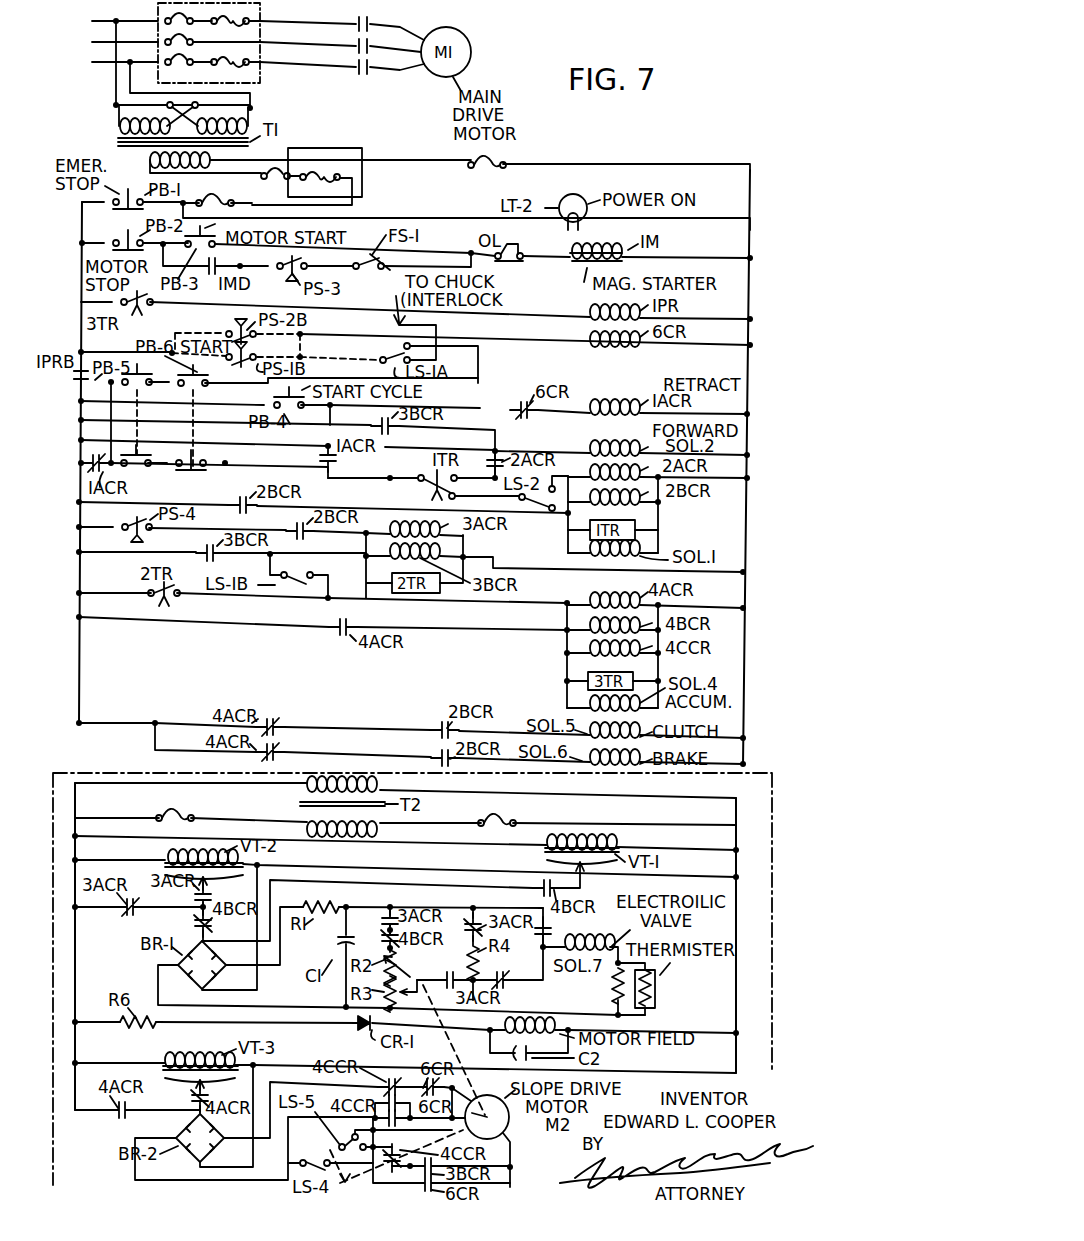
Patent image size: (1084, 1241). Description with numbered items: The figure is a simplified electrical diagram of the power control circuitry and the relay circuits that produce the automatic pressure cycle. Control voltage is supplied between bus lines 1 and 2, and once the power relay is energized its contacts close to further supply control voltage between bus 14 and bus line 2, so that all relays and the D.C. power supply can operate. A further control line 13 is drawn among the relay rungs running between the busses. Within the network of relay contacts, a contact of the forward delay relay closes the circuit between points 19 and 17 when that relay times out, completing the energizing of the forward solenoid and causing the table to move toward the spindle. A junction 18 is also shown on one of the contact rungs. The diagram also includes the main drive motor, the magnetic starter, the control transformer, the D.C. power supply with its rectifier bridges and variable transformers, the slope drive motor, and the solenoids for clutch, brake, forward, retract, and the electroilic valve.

The bus line 1 is at (80, 320).
The bus line 2 is at (751, 334).
The control line 13 is at (80, 462).
The bus 14 is at (80, 401).
The point 17 is at (498, 482).
The junction 18 is at (225, 466).
The point 19 is at (388, 480).